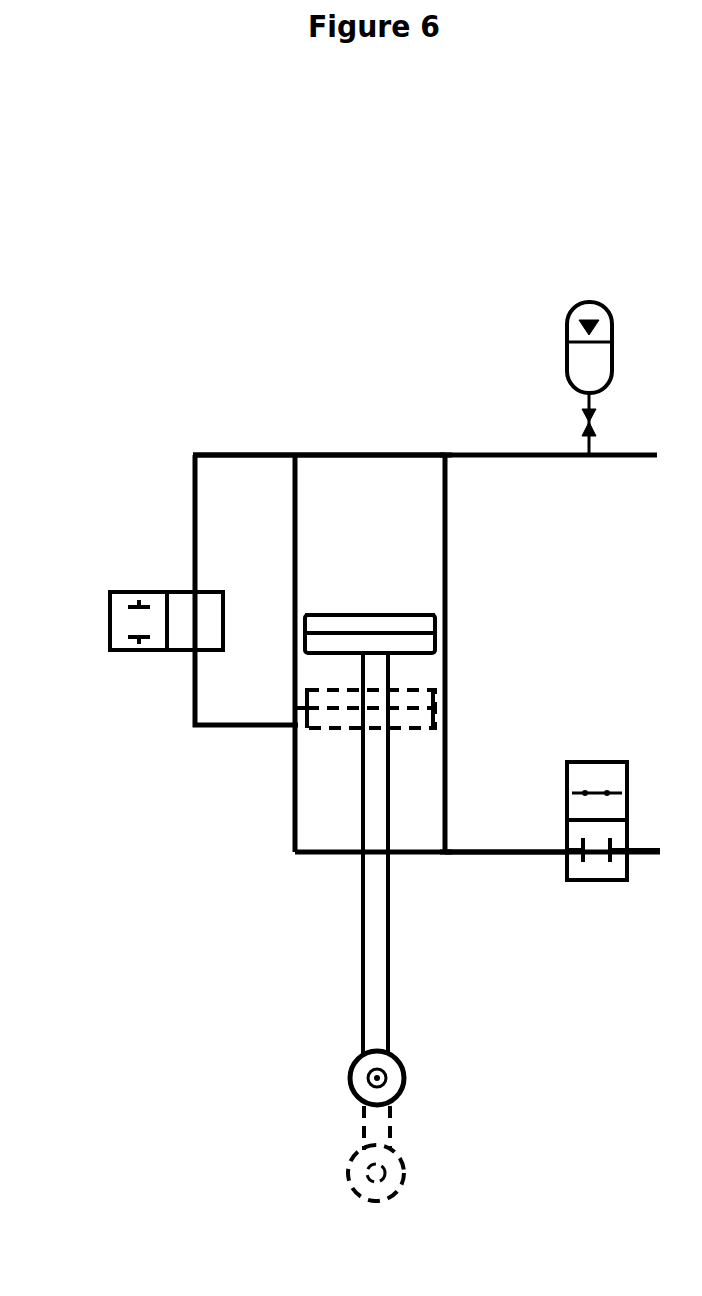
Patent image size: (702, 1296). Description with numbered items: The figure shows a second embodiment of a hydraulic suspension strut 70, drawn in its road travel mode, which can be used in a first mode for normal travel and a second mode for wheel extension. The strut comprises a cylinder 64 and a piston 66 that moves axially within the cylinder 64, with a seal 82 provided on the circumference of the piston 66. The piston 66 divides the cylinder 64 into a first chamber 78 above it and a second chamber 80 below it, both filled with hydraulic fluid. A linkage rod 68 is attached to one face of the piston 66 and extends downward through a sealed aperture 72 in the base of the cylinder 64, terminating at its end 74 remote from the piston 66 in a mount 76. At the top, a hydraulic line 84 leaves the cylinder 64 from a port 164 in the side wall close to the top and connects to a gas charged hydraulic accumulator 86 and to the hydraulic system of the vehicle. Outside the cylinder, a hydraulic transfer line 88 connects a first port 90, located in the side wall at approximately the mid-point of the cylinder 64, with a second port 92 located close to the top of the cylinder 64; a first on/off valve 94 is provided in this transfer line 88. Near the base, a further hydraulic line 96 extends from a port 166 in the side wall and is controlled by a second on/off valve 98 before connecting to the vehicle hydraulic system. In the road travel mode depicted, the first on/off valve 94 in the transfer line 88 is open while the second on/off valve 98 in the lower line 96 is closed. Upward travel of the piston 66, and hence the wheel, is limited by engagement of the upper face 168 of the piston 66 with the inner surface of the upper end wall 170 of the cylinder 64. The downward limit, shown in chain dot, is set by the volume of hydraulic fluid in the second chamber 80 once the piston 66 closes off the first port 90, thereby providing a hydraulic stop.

The hydraulic suspension strut 70 is at (152, 213).
The second port 92 is at (287, 453).
The first chamber 78 is at (370, 497).
The upper end wall 170 is at (360, 453).
The upper face 168 is at (365, 612).
The piston 66 is at (340, 625).
The first on/off valve 94 is at (110, 650).
The hydraulic transfer line 88 is at (192, 687).
The first port 90 is at (290, 727).
The sealed aperture 72 is at (360, 853).
The end 74 is at (357, 1050).
The mount 76 is at (350, 1080).
The linkage rod 68 is at (392, 965).
The gas charged hydraulic accumulator 86 is at (563, 330).
The hydraulic line 84 is at (570, 453).
The port 164 is at (447, 453).
The seal 82 is at (445, 632).
The cylinder 64 is at (447, 678).
The second chamber 80 is at (418, 765).
The port 166 is at (448, 848).
The further hydraulic line 96 is at (492, 852).
The second on/off valve 98 is at (600, 880).